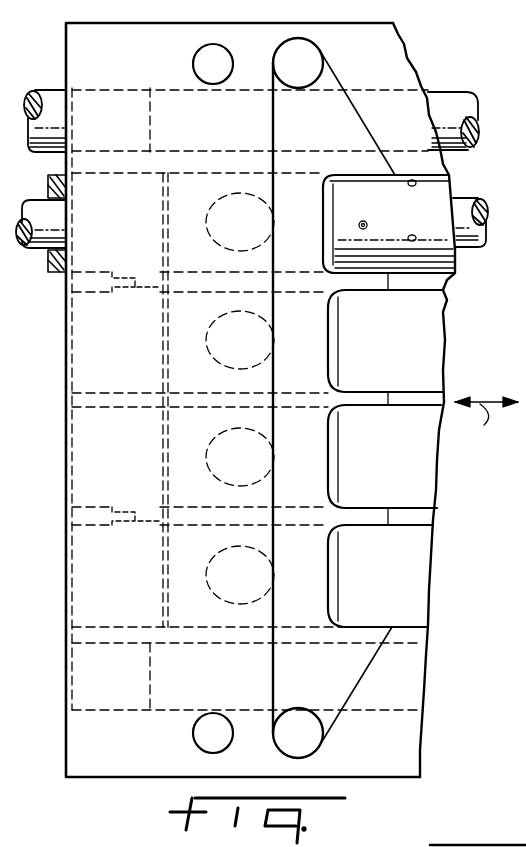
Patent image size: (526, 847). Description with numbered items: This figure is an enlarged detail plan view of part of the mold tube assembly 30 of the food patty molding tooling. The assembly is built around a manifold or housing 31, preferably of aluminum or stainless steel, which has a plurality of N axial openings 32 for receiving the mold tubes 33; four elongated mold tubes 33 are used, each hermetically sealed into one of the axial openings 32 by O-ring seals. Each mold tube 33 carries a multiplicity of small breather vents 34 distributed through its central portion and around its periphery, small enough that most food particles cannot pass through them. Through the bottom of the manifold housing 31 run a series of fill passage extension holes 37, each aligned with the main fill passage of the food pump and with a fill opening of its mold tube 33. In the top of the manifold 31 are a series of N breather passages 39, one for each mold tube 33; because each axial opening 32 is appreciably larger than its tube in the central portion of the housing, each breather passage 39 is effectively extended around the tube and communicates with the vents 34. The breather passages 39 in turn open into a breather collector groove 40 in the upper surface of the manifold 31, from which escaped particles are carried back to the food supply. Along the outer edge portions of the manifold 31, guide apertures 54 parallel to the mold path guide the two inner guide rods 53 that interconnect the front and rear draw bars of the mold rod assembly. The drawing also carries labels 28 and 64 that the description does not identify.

The adjacent structure 28 is at (515, 738).
The mold tube assembly 30 is at (128, 785).
The manifold housing 31 is at (398, 51).
The axial openings 32 is at (110, 182).
The mold tubes 33 is at (56, 272).
The breather vents 34 is at (412, 235).
The fill passage extension holes 37 is at (265, 240).
The breather passages 39 is at (420, 306).
The breather collector groove 40 is at (358, 683).
The inner guide rods 53 is at (462, 105).
The guide apertures 54 is at (388, 91).
The side cable 64 is at (470, 200).